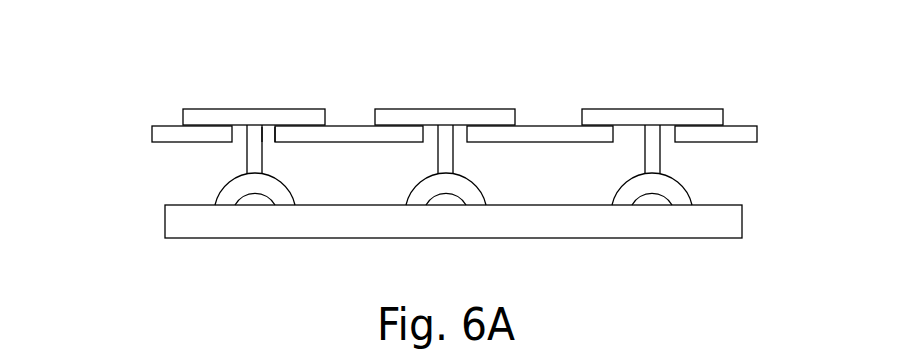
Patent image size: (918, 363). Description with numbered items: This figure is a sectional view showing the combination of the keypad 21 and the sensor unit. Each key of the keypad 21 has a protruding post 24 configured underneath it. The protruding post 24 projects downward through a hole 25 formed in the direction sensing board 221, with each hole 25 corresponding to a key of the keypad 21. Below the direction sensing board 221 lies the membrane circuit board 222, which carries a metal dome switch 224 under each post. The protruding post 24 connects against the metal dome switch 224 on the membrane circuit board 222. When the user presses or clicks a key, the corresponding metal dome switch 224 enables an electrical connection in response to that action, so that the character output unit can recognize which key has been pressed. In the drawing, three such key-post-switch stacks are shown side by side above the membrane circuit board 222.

The keypad 21 is at (222, 108).
The protruding post 24 is at (246, 160).
The hole 25 is at (270, 132).
The direction sensing board 221 is at (728, 120).
The membrane circuit board 222 is at (662, 218).
The metal dome switch 224 is at (214, 203).